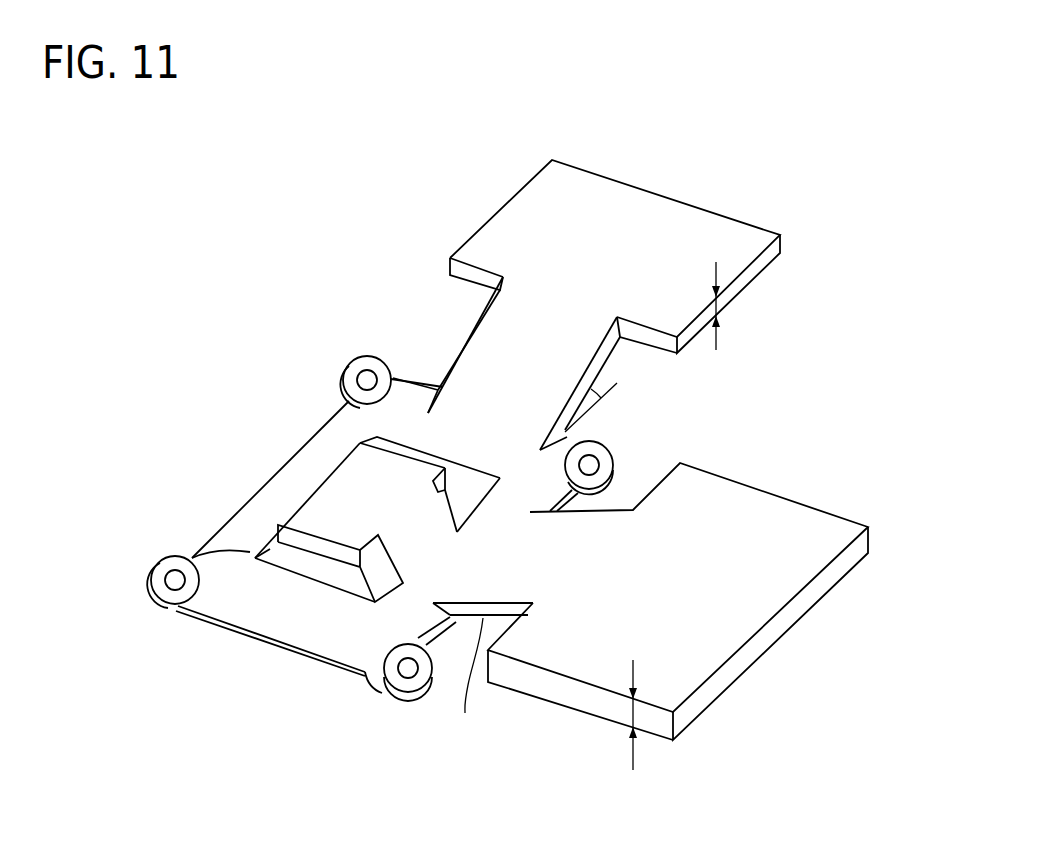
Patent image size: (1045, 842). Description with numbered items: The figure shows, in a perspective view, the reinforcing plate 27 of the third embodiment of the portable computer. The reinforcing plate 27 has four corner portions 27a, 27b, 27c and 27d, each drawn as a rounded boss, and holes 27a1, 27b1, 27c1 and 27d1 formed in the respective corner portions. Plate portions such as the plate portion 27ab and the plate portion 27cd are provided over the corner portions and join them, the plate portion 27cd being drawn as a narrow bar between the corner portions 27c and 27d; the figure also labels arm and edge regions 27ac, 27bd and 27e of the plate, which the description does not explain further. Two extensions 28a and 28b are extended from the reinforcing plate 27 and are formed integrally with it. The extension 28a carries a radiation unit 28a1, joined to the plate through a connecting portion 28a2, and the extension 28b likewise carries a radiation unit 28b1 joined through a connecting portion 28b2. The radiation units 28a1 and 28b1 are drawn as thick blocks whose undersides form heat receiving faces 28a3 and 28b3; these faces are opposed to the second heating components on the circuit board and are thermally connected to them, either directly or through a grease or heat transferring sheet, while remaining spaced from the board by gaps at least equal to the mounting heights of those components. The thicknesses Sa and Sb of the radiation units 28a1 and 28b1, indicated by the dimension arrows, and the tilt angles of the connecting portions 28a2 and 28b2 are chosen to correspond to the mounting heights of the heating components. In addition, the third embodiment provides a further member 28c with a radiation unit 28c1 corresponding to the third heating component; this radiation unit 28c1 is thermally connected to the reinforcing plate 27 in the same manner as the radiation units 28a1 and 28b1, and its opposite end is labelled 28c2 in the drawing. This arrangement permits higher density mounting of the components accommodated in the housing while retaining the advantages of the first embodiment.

The reinforcing plate 27 is at (380, 460).
The corner portion 27a is at (331, 344).
The hole 27a1 is at (378, 357).
The plate portion 27ab is at (452, 430).
The arm between pivots a and c 27ac is at (320, 470).
The corner portion 27b is at (623, 447).
The hole 27b1 is at (597, 456).
The arm between pivots b and d 27bd is at (470, 550).
The corner portion 27c is at (138, 628).
The hole 27c1 is at (177, 590).
The plate portion 27cd is at (307, 617).
The corner portion 27d is at (394, 716).
The hole 27d1 is at (404, 680).
The link edge portion 27e is at (250, 550).
The extension 28a is at (674, 557).
The radiation unit 28a1 is at (787, 543).
The connecting portion 28a2 is at (597, 523).
The heat receiving face 28a3 is at (800, 618).
The extension 28b is at (643, 283).
The radiation unit 28b1 is at (697, 222).
The connecting portion 28b2 is at (482, 362).
The heat receiving face 28b3 is at (755, 282).
The connecting bar 28c is at (375, 488).
The radiation unit 28c1 is at (358, 450).
The connecting bar hook end 28c2 is at (432, 513).
The thickness Sa is at (640, 714).
The thickness Sb is at (720, 302).